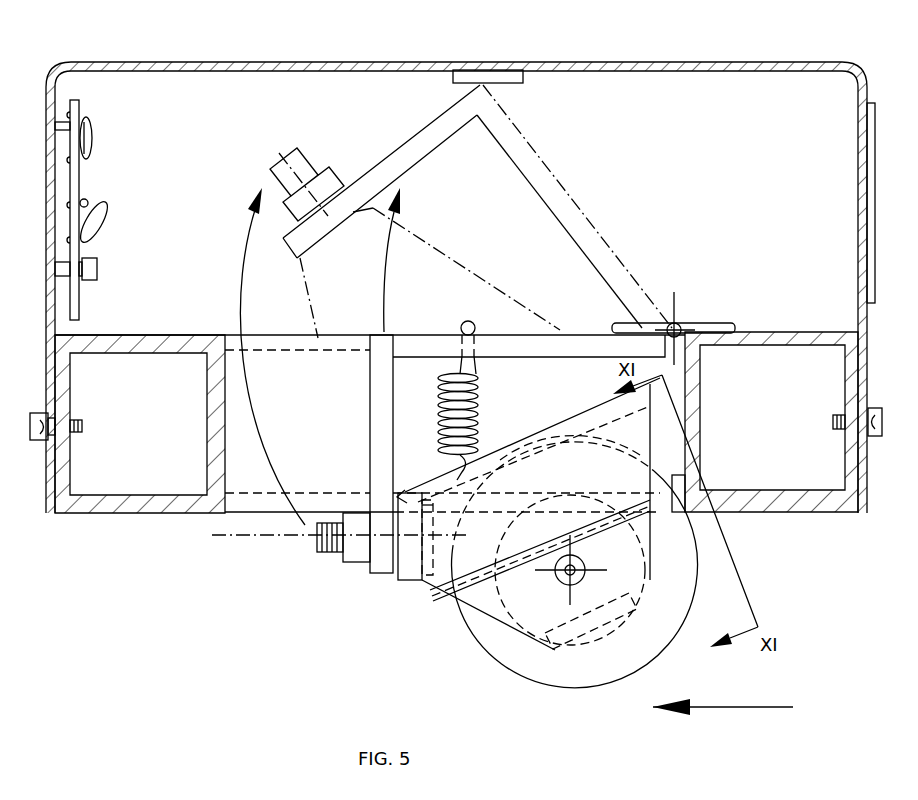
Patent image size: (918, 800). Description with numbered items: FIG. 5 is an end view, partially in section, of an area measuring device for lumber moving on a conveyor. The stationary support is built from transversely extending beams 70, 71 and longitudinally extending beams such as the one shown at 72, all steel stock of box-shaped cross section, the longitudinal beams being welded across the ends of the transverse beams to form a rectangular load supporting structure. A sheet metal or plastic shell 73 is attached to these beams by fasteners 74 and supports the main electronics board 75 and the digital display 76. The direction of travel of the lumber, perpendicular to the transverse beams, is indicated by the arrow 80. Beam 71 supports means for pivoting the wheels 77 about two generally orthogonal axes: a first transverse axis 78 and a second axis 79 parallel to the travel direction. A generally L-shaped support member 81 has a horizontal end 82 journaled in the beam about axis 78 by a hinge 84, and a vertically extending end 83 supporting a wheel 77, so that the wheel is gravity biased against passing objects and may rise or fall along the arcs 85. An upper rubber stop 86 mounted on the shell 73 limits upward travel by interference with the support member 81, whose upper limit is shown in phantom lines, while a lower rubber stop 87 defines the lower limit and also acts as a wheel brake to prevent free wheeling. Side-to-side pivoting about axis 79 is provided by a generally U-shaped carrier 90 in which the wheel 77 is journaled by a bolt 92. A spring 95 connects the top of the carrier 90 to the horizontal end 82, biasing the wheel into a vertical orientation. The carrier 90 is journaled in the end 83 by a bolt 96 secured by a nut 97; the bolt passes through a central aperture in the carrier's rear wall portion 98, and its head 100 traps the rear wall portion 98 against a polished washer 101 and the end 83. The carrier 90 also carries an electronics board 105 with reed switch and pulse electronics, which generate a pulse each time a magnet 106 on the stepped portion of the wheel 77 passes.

The transversely extending beam 70 is at (126, 505).
The transversely extending beam 71 is at (792, 503).
The longitudinally extending beam 72 is at (259, 474).
The shell 73 is at (633, 60).
The fasteners 74 is at (34, 447).
The main electronics board 75 is at (112, 207).
The digital display 76 is at (873, 115).
The wheel 77 is at (602, 680).
The first axis 78 is at (680, 320).
The second axis 79 is at (283, 537).
The arrow 80 is at (748, 707).
The L-shaped support member 81 is at (423, 318).
The horizontal end 82 is at (612, 346).
The vertically extending end 83 is at (383, 570).
The hinge 84 is at (736, 323).
The arcs 85 is at (243, 268).
The upper rubber stop 86 is at (510, 78).
The lower rubber stop 87 is at (684, 512).
The U-shaped carrier 90 is at (522, 440).
The bolt 92 is at (566, 584).
The spring 95 is at (477, 402).
The bolt 96 is at (320, 553).
The nut 97 is at (357, 500).
The rear wall portion 98 is at (415, 570).
The head 100 is at (437, 582).
The polished washer 101 is at (403, 500).
The electronics board 105 is at (580, 435).
The magnet 106 is at (553, 644).